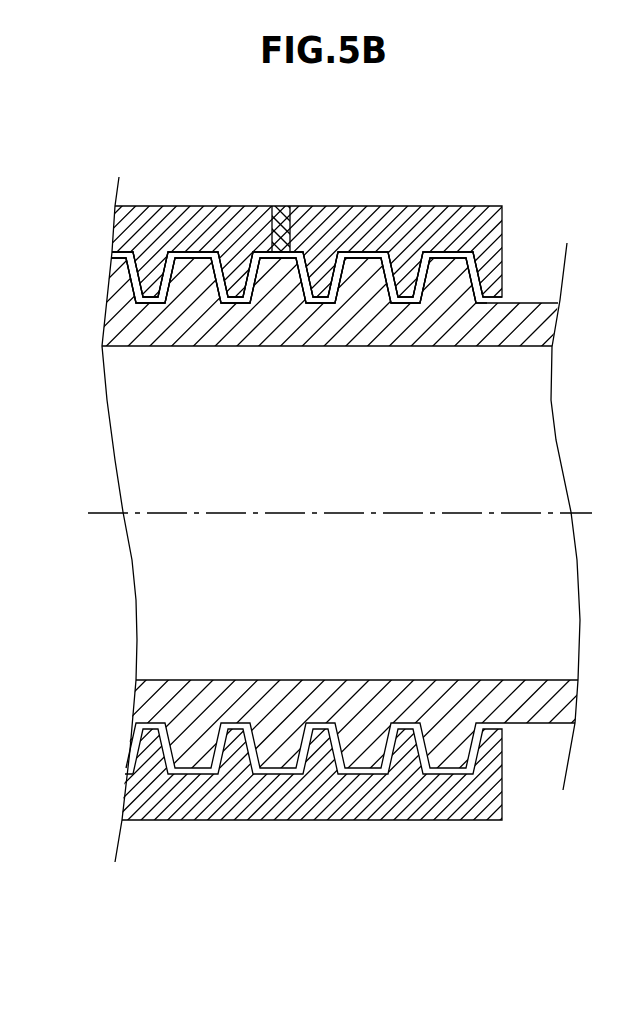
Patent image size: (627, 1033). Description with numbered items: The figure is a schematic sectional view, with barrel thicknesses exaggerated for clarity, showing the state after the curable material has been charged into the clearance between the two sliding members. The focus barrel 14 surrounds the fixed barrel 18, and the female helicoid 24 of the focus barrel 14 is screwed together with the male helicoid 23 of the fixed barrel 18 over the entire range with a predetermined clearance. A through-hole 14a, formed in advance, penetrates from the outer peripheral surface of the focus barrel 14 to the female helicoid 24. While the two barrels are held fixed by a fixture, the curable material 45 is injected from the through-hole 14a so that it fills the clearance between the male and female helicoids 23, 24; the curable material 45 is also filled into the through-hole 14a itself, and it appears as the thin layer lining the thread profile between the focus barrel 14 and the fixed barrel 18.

The focus barrel 14 is at (426, 214).
The through-hole 14a is at (283, 206).
The fixed barrel 18 is at (444, 330).
The male helicoid 23 is at (312, 278).
The female helicoid 24 is at (182, 286).
The curable material 45 is at (190, 206).